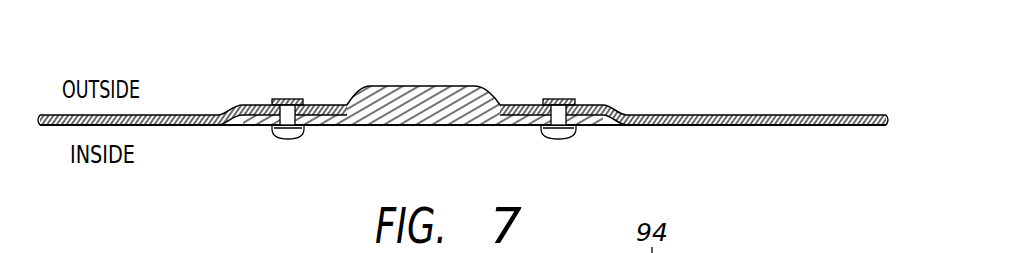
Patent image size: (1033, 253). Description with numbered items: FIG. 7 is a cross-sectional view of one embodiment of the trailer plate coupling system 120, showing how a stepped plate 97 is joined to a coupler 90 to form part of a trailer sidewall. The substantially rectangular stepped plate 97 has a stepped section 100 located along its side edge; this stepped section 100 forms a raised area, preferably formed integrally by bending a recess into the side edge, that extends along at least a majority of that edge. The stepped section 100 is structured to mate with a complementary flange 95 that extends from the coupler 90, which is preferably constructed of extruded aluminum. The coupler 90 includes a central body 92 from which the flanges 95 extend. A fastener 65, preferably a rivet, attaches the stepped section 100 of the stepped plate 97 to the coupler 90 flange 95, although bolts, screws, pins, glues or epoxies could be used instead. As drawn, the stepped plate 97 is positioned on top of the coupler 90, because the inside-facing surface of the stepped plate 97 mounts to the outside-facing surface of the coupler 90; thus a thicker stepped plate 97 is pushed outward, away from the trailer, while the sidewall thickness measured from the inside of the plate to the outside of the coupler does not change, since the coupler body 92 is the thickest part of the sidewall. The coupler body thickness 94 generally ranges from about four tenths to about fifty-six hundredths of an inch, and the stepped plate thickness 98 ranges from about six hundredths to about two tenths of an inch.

The fastener 65 is at (288, 136).
The coupler 90 is at (465, 130).
The central body 92 is at (404, 115).
The coupler body thickness 94 is at (400, 157).
The flange 95 is at (317, 128).
The stepped plate 97 is at (193, 128).
The stepped plate thickness 98 is at (676, 155).
The stepped section 100 is at (342, 70).
The trailer plate coupling system 120 is at (474, 63).